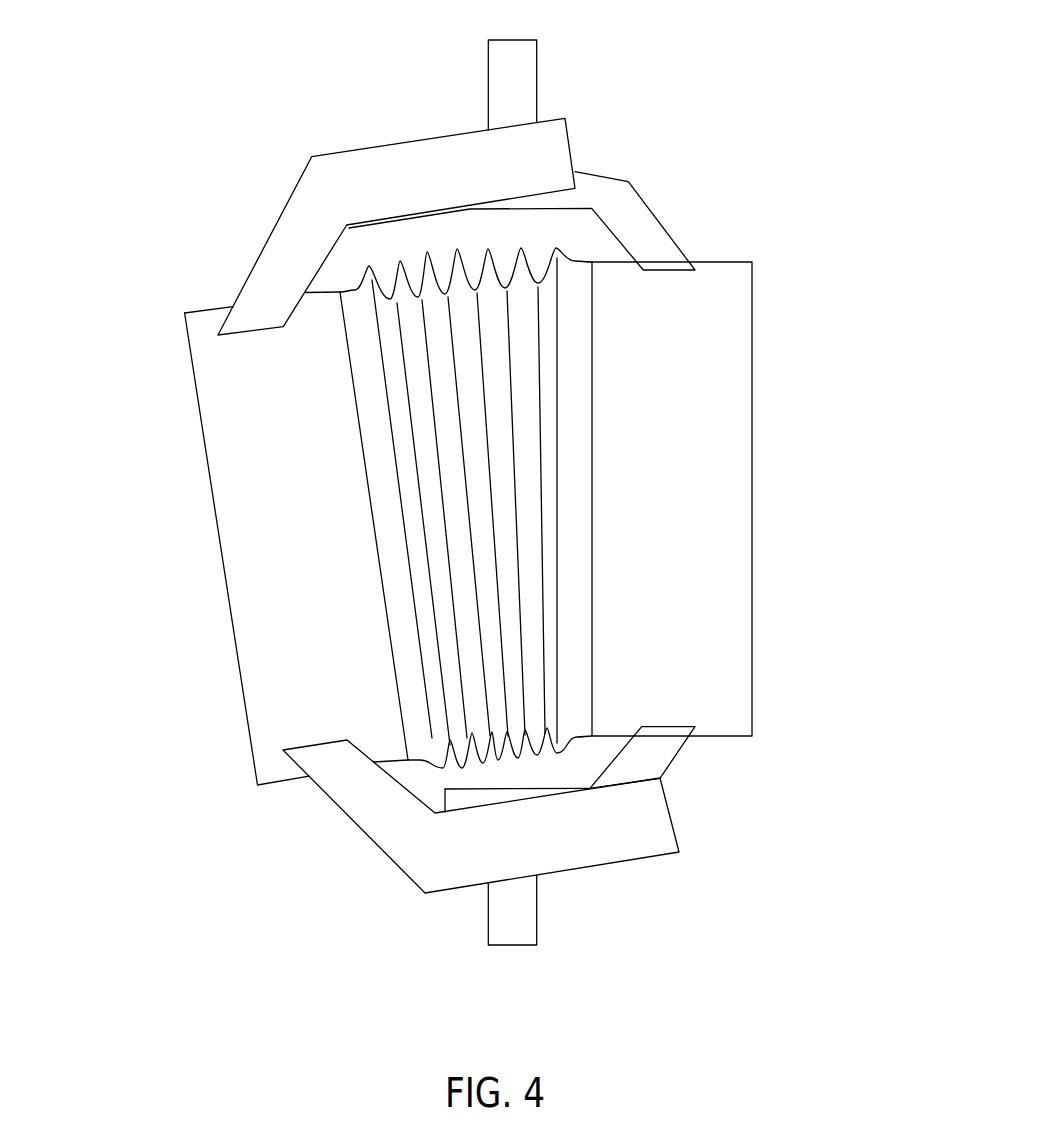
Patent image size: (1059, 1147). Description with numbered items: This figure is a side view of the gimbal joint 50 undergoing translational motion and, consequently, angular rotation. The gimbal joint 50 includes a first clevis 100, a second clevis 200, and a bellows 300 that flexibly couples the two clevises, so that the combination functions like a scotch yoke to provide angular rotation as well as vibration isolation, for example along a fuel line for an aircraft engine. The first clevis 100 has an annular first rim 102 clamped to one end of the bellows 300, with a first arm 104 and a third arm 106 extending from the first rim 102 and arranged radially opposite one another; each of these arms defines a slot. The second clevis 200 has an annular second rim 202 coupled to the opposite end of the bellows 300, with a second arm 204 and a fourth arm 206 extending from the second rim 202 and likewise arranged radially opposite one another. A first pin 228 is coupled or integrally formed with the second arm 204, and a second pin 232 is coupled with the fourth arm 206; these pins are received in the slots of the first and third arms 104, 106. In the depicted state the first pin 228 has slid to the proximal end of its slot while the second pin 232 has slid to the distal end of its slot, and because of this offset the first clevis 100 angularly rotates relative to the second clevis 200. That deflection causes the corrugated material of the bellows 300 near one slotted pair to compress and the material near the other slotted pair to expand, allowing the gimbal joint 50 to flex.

The gimbal joint 50 is at (463, 479).
The first clevis 100 is at (394, 509).
The first rim 102 is at (260, 670).
The first arm 104 is at (355, 838).
The third arm 106 is at (278, 196).
The second clevis 200 is at (582, 479).
The second rim 202 is at (727, 275).
The second arm 204 is at (683, 762).
The fourth arm 206 is at (635, 167).
The first pin 228 is at (528, 920).
The second pin 232 is at (500, 78).
The bellows 300 is at (402, 446).